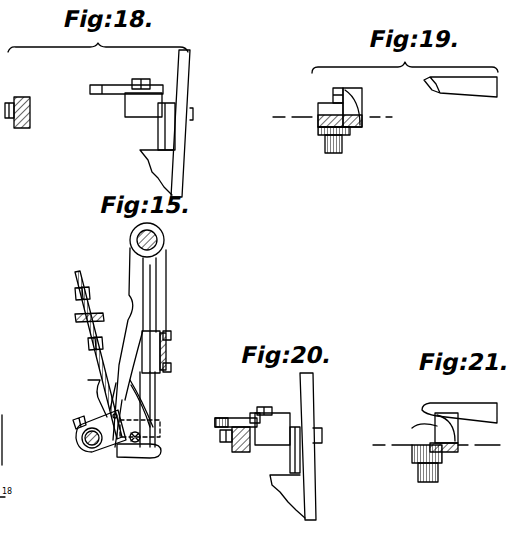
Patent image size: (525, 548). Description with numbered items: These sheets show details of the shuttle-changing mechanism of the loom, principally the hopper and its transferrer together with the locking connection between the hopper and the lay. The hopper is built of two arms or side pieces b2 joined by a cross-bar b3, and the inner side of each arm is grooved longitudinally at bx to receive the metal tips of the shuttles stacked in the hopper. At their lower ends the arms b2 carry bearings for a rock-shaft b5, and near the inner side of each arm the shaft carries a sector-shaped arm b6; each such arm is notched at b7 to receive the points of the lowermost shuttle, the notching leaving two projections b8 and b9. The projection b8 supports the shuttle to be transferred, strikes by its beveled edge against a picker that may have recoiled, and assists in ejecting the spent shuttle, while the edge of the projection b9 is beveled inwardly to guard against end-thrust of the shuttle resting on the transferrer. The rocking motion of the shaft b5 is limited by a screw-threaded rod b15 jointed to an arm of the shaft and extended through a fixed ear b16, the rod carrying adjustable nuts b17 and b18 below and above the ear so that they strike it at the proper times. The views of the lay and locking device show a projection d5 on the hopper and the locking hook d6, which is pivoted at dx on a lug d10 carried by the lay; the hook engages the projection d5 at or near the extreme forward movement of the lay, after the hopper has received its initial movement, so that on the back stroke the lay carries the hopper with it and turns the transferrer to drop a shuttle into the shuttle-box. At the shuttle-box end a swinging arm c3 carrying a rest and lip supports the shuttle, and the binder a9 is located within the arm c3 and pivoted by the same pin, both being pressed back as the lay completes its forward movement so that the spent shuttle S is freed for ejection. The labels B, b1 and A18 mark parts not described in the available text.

In FIG. 18, the plate A18 is at (174, 123).
In FIG. 20, the plate A18 is at (316, 480).
In FIG. 18, the lug d10 is at (138, 121).
In FIG. 20, the lug d10 is at (277, 443).
In FIG. 18, the locking device or hook d6 is at (126, 80).
In FIG. 19, the locking device or hook d6 is at (460, 95).
In FIG. 20, the locking device or hook d6 is at (222, 418).
In FIG. 21, the locking device or hook d6 is at (462, 403).
In FIG. 18, the pivot dx is at (143, 74).
In FIG. 20, the pivot dx is at (262, 407).
In FIG. 18, the projection d5 is at (40, 81).
In FIG. 19, the projection d5 is at (331, 106).
In FIG. 20, the projection d5 is at (252, 413).
In FIG. 21, the projection d5 is at (425, 428).
In FIG. 18, the arms or side pieces b2 is at (28, 110).
In FIG. 19, the arms or side pieces b2 is at (355, 123).
In FIG. 15, the arms or side pieces b2 is at (162, 262).
In FIG. 20, the arms or side pieces b2 is at (235, 450).
In FIG. 21, the arms or side pieces b2 is at (452, 448).
In FIG. 19, the rock-shaft b5 is at (334, 148).
In FIG. 15, the rock-shaft b5 is at (82, 437).
In FIG. 21, the rock-shaft b5 is at (418, 473).
In FIG. 15, the pivot hub b1 is at (157, 236).
In FIG. 15, the groove bx is at (150, 312).
In FIG. 15, the cross-bar b3 is at (170, 350).
In FIG. 15, the rod b15 is at (97, 364).
In FIG. 15, the adjustable nut b18 is at (75, 292).
In FIG. 15, the fixed ear b16 is at (75, 317).
In FIG. 15, the adjustable nut b17 is at (88, 344).
In FIG. 15, the arms b6 is at (88, 393).
In FIG. 15, the projection b9 is at (137, 400).
In FIG. 15, the block B is at (146, 428).
In FIG. 15, the notch b7 is at (158, 440).
In FIG. 15, the projection b8 is at (158, 456).
In FIG. 15, the swinging arm c3 is at (3, 432).
In FIG. 15, the binder a9 is at (3, 466).